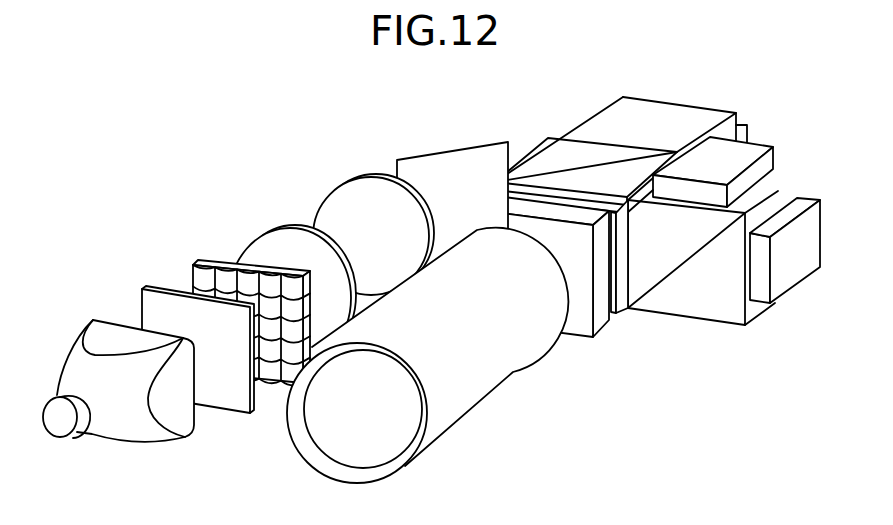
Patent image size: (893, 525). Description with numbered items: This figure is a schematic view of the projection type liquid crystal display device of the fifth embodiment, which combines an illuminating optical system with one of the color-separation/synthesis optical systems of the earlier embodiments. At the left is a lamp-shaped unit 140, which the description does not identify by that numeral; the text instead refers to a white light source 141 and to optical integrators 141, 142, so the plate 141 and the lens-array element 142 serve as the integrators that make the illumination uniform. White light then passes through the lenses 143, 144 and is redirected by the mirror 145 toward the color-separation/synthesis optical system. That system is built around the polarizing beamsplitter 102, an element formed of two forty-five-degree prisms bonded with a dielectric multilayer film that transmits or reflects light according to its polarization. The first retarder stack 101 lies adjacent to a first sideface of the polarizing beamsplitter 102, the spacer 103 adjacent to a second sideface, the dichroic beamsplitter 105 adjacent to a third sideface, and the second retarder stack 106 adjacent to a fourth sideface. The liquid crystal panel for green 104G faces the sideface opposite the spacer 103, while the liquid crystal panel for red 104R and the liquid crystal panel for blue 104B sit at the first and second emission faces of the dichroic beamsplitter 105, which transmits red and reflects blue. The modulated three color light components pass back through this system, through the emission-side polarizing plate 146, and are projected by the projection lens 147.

The first retarder stack 101 is at (517, 168).
The polarizing beamsplitter 102 is at (573, 148).
The spacer 103 is at (624, 110).
The liquid crystal panel for green 104G is at (745, 128).
The liquid crystal panel for blue 104B is at (770, 160).
The liquid crystal panel for red 104R is at (790, 277).
The dichroic beamsplitter 105 is at (705, 308).
The second retarder stack 106 is at (620, 303).
The light source lamp 140 is at (162, 433).
The optical integrator 141 is at (153, 302).
The optical integrator 142 is at (205, 257).
The lens 143 is at (278, 243).
The lens 144 is at (353, 193).
The mirror 145 is at (428, 163).
The emission-side polarizing plate 146 is at (575, 327).
The projection lens 147 is at (490, 373).